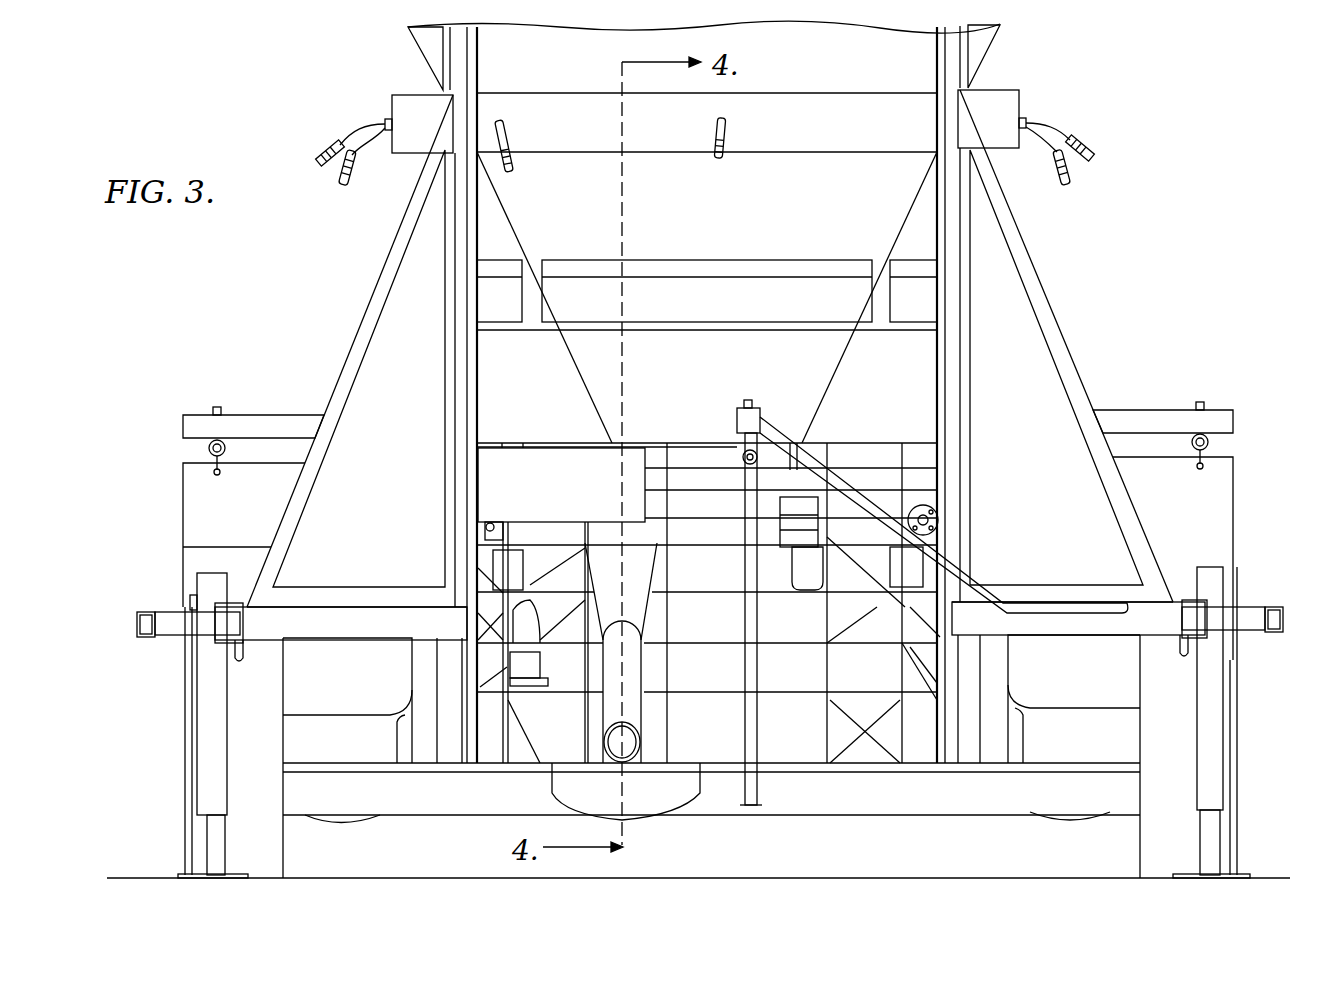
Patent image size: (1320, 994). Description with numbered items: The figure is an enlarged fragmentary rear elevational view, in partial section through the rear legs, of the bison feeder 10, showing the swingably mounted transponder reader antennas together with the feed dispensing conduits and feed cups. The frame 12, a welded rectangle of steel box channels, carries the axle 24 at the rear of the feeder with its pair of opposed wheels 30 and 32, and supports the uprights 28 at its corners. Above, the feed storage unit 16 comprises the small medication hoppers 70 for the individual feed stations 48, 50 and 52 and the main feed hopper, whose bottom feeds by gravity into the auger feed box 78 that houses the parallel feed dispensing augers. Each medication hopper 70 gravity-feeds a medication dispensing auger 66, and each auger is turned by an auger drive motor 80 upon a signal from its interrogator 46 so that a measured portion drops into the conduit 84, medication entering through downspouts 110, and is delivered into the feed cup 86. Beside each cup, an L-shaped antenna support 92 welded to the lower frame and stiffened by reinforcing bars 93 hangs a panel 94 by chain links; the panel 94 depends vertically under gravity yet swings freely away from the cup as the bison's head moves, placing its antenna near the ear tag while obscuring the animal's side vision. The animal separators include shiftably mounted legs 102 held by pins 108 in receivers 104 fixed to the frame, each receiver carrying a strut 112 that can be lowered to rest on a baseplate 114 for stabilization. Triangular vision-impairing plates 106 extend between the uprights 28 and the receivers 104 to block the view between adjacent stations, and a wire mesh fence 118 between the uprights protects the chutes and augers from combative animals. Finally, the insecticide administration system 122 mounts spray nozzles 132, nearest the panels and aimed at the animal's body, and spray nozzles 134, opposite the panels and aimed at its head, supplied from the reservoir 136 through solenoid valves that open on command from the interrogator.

The bison feeder 10 is at (1122, 279).
The frame 12 is at (874, 825).
The feed storage unit 16 is at (405, 65).
The axle 24 is at (305, 795).
The uprights 28 is at (458, 53).
The wheel 30 is at (283, 838).
The wheel 32 is at (1140, 830).
The interrogator 46 is at (553, 462).
The feed station 48 is at (350, 820).
The feed station 50 is at (635, 825).
The feed station 52 is at (1070, 818).
The medication dispensing auger 66 is at (940, 500).
The medication hopper 70 is at (491, 287).
The auger feed box 78 is at (714, 530).
The auger drive motor 80 is at (808, 582).
The conduit 84 is at (403, 733).
The feed cup 86 is at (680, 795).
The antenna support 92 is at (253, 420).
The reinforcing bars 93 is at (965, 575).
The panel 94 is at (192, 517).
The legs 102 is at (170, 633).
The receivers 104 is at (380, 630).
The vision-impairing plate 106 is at (390, 350).
The pins 108 is at (240, 654).
The downspouts 110 is at (635, 605).
The strut 112 is at (200, 762).
The baseplate 114 is at (185, 875).
The wire mesh fence 118 is at (855, 700).
The insecticide administration system 122 is at (1055, 99).
The spray nozzle 132 is at (353, 133).
The spray nozzle 134 is at (510, 142).
The reservoir 136 is at (540, 738).